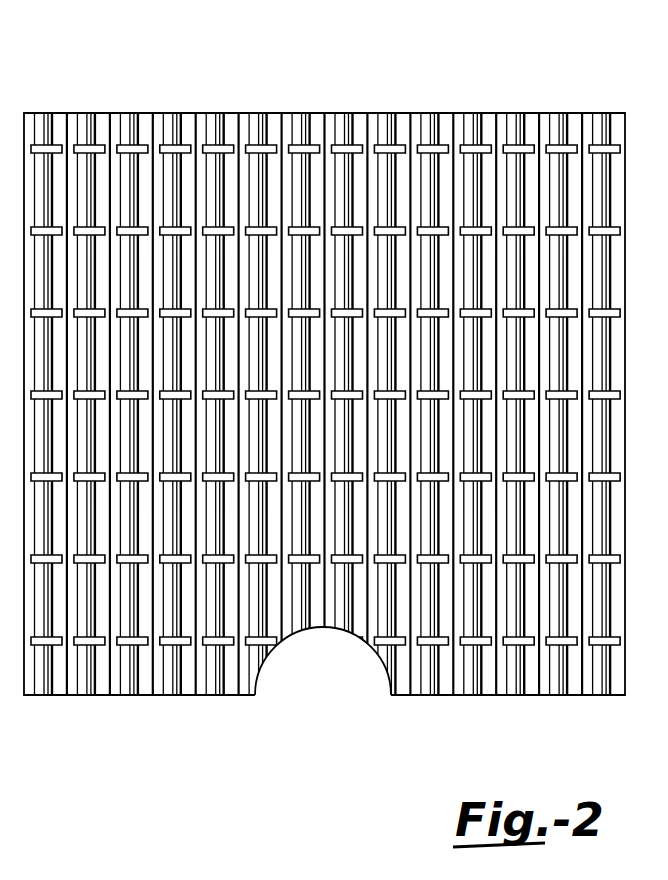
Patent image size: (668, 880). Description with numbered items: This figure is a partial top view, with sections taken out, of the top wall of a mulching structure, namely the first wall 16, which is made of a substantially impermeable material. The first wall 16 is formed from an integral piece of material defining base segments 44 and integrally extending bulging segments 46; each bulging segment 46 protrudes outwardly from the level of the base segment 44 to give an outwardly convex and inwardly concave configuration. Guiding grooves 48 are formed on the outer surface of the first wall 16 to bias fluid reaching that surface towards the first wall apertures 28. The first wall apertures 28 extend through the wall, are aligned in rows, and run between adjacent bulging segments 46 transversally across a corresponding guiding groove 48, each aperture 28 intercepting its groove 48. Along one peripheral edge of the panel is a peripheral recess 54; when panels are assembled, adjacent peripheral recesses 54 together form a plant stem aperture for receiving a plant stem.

The first wall 16 is at (536, 109).
The first wall aperture 28 is at (180, 147).
The base segment 44 is at (317, 123).
The bulging segment 46 is at (453, 127).
The guiding groove 48 is at (224, 116).
The peripheral recess 54 is at (368, 648).